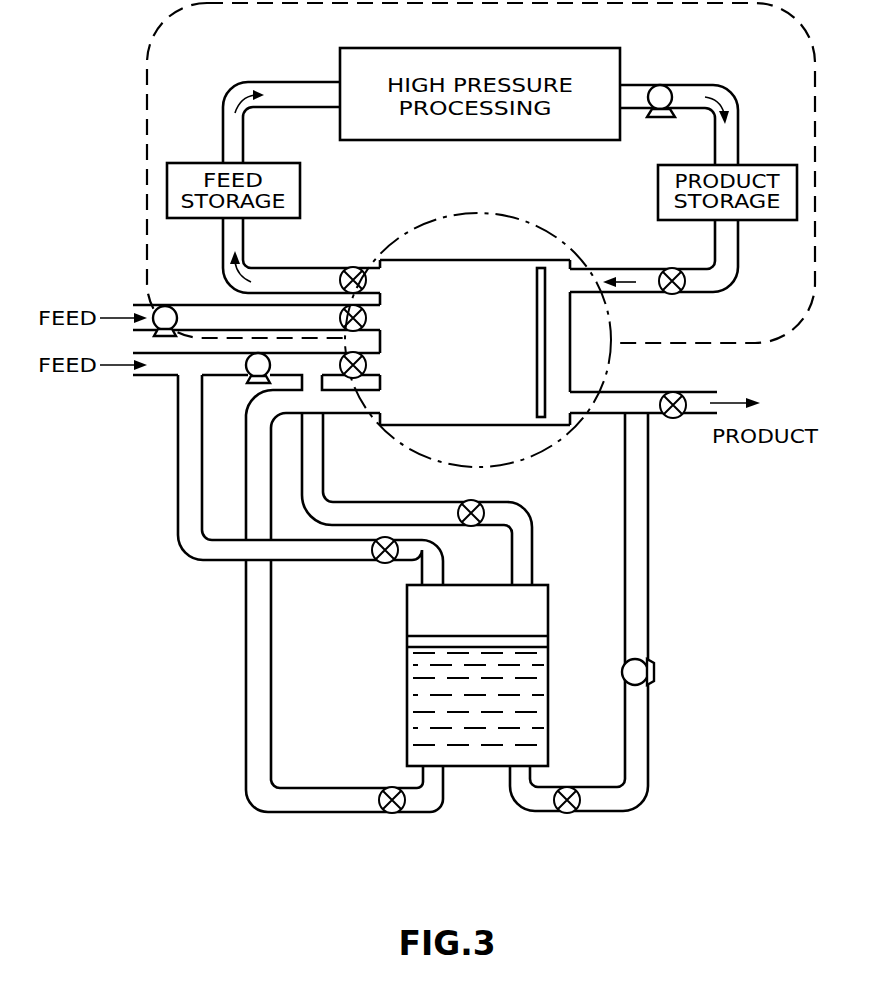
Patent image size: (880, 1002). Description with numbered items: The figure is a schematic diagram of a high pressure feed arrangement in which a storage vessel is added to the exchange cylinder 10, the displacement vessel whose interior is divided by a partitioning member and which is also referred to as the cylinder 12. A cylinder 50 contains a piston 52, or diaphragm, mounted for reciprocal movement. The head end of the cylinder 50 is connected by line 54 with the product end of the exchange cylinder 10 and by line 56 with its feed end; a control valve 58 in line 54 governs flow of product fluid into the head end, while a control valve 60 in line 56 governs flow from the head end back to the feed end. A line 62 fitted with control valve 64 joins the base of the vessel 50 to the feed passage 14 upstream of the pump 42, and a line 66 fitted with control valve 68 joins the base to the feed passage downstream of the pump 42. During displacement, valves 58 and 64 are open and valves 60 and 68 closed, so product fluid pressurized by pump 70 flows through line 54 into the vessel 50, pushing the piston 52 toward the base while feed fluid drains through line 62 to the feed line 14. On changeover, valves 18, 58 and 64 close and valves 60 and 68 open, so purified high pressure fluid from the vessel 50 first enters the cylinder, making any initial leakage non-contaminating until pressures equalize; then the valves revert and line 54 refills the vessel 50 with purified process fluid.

The exchange cylinder 10 is at (445, 257).
The cylinder 12 is at (503, 428).
The feed passage 14 is at (153, 378).
The valve 18 is at (367, 368).
The pump 42 is at (248, 385).
The cylinder 50 is at (408, 705).
The piston 52 is at (436, 643).
The line 54 is at (650, 568).
The line 56 is at (246, 697).
The control valve 58 is at (568, 814).
The control valve 60 is at (388, 814).
The line 62 is at (178, 492).
The control valve 64 is at (385, 566).
The line 66 is at (387, 503).
The control valve 68 is at (470, 528).
The pump 70 is at (657, 676).